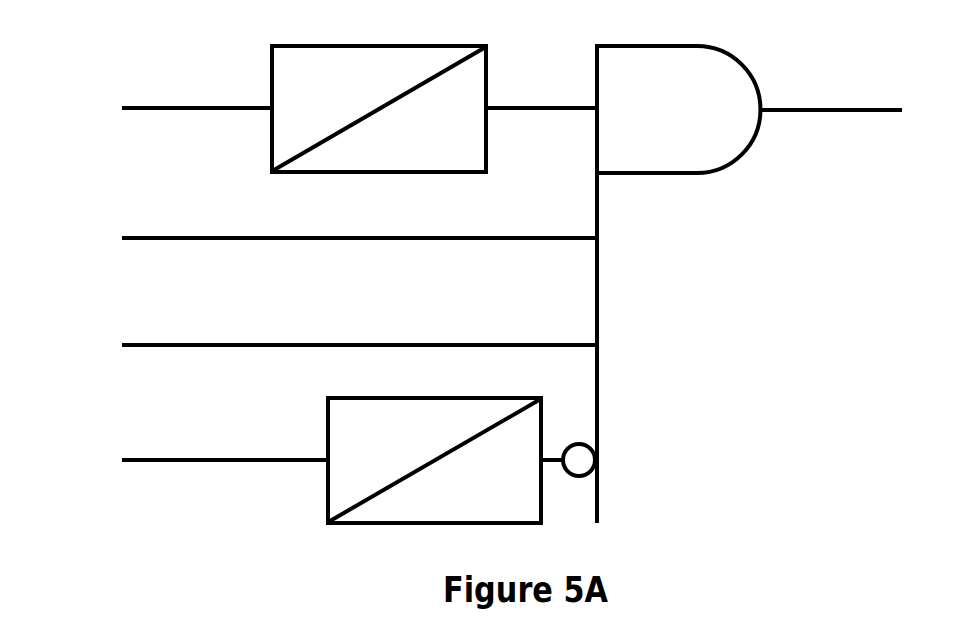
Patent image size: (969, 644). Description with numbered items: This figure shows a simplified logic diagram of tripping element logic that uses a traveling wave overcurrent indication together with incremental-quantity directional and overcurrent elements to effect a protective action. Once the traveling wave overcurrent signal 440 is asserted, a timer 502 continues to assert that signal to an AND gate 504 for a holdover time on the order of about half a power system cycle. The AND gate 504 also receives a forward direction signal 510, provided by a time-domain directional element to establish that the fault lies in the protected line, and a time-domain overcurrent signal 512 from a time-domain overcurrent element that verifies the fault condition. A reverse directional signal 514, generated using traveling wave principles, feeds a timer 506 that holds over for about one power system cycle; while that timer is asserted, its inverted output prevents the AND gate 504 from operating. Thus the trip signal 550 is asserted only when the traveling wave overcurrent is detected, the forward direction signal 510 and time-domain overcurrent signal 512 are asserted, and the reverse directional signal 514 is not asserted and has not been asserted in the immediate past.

The traveling wave overcurrent signal 440 is at (165, 112).
The timer 502 is at (360, 46).
The AND gate 504 is at (660, 46).
The timer 506 is at (380, 526).
The forward direction signal 510 is at (396, 226).
The time-domain overcurrent signal 512 is at (352, 335).
The reverse directional signal 514 is at (282, 451).
The trip signal 550 is at (858, 114).